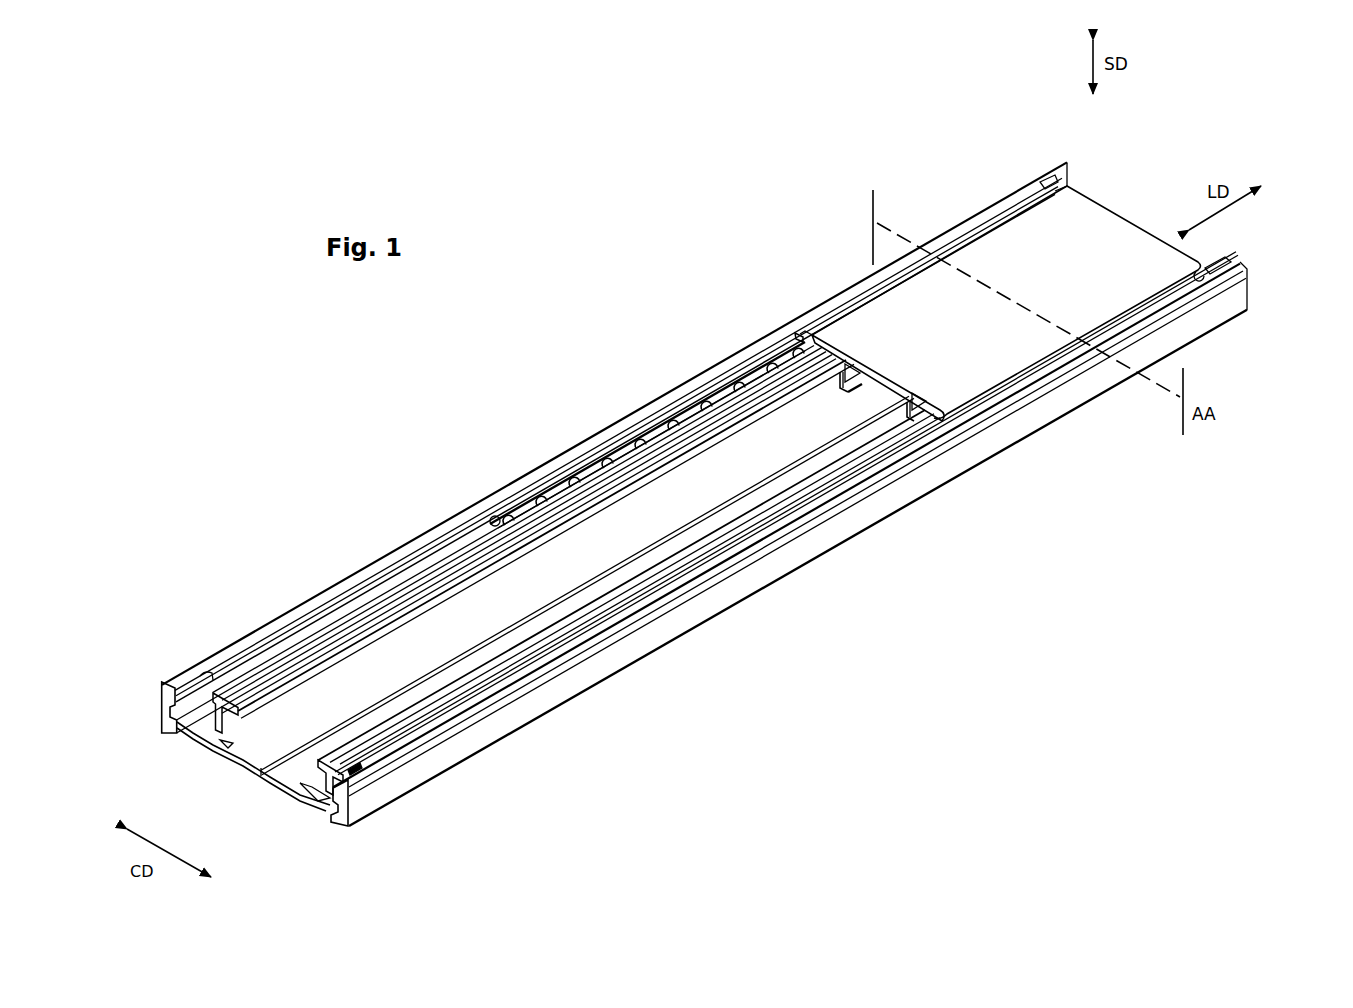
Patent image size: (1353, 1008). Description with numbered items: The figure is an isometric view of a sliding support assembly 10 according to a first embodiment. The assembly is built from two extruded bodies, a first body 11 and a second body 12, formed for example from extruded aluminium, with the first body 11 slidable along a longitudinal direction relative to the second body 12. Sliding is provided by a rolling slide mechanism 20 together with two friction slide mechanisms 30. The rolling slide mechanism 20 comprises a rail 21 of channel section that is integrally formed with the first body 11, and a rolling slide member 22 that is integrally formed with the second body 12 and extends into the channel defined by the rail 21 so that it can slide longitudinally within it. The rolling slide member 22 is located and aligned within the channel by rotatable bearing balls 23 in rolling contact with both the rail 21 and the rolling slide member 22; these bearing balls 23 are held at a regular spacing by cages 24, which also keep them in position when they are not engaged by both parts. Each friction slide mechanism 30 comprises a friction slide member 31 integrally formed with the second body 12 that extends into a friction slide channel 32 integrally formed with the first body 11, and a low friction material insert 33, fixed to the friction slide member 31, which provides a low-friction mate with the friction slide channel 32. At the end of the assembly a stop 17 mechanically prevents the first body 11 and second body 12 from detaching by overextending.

The sliding support assembly 10 is at (856, 185).
The first body 11 is at (1224, 306).
The second body 12 is at (1084, 232).
The stop 17 is at (311, 792).
The rolling slide mechanism 20 is at (762, 349).
The rail 21 is at (190, 697).
The rolling slide member 22 is at (810, 345).
The bearing balls 23 is at (633, 438).
The cages 24 is at (607, 453).
The friction slide mechanism 30 is at (845, 390).
The friction slide member 31 is at (914, 414).
The friction slide channel 32 is at (237, 716).
The low friction material insert 33 is at (826, 391).